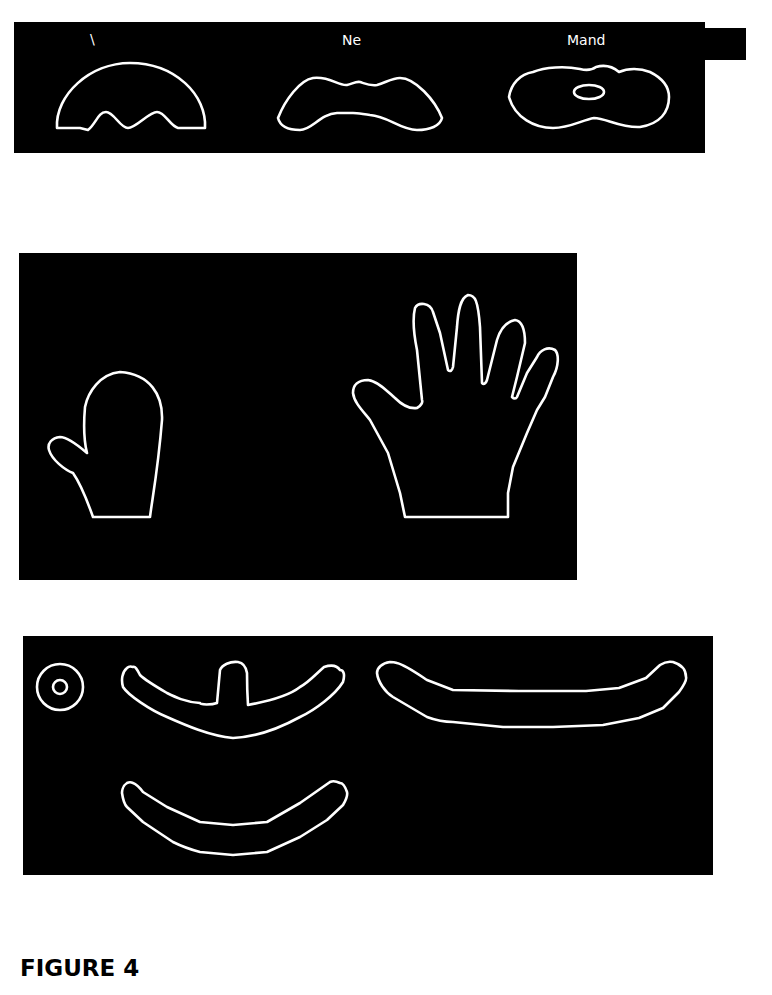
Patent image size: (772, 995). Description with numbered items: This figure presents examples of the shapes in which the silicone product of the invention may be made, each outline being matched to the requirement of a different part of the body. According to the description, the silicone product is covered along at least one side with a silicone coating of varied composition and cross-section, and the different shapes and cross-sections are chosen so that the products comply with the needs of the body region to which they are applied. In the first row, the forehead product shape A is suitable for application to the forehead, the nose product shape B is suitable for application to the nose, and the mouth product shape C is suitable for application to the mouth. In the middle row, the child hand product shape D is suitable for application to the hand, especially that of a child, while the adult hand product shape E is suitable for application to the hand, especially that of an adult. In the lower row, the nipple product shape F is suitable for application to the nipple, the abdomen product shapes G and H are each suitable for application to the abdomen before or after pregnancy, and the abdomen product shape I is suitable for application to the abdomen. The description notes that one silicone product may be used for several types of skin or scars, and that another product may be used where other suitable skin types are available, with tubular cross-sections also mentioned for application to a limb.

The forehead product shape A is at (120, 86).
The nose product shape B is at (360, 86).
The mouth product shape C is at (589, 85).
The child hand product shape D is at (102, 399).
The adult hand product shape E is at (446, 398).
The nipple product shape F is at (60, 708).
The abdomen product shape G is at (243, 705).
The abdomen product shape H is at (242, 822).
The abdomen product shape I is at (531, 715).